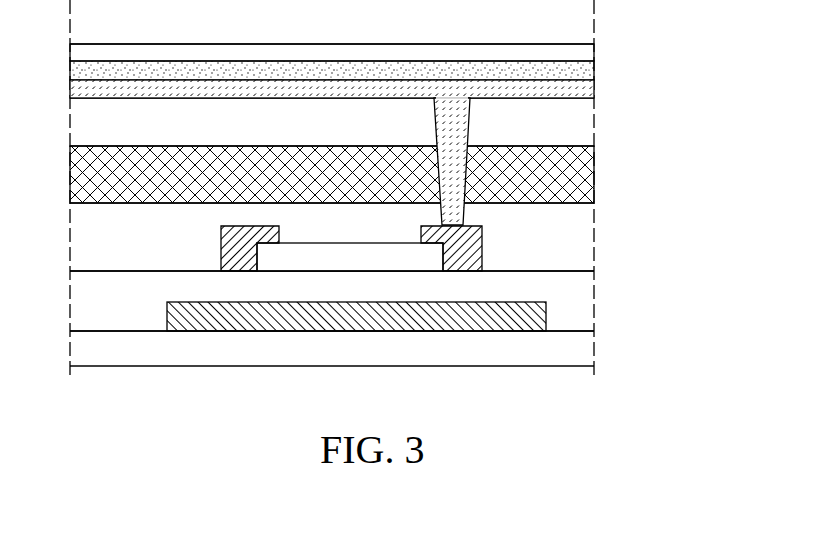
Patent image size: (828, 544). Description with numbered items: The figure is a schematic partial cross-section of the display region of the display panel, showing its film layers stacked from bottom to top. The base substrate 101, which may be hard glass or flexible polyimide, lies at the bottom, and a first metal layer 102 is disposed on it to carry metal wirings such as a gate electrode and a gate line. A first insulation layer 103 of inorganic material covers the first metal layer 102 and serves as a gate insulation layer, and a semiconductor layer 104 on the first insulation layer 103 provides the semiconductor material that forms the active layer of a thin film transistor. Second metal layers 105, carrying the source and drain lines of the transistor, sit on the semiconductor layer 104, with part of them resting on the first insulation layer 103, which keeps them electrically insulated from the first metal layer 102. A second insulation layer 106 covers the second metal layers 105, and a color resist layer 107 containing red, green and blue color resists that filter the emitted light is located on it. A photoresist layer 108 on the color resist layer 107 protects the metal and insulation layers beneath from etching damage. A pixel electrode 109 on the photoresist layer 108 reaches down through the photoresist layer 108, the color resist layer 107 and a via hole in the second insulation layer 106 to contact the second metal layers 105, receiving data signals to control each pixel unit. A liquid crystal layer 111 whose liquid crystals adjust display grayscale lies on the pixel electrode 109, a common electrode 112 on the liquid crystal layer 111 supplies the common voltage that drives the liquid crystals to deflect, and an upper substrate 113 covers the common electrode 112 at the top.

The base substrate 101 is at (593, 348).
The first metal layer 102 is at (546, 315).
The first insulation layer 103 is at (597, 293).
The semiconductor layer 104 is at (372, 263).
The second metal layers 105 is at (482, 259).
The second insulation layer 106 is at (600, 225).
The color resist layer 107 is at (600, 178).
The photoresist layer 108 is at (371, 122).
The pixel electrode 109 is at (590, 90).
The liquid crystal layer 111 is at (588, 70).
The common electrode 112 is at (588, 53).
The upper substrate 113 is at (592, 25).